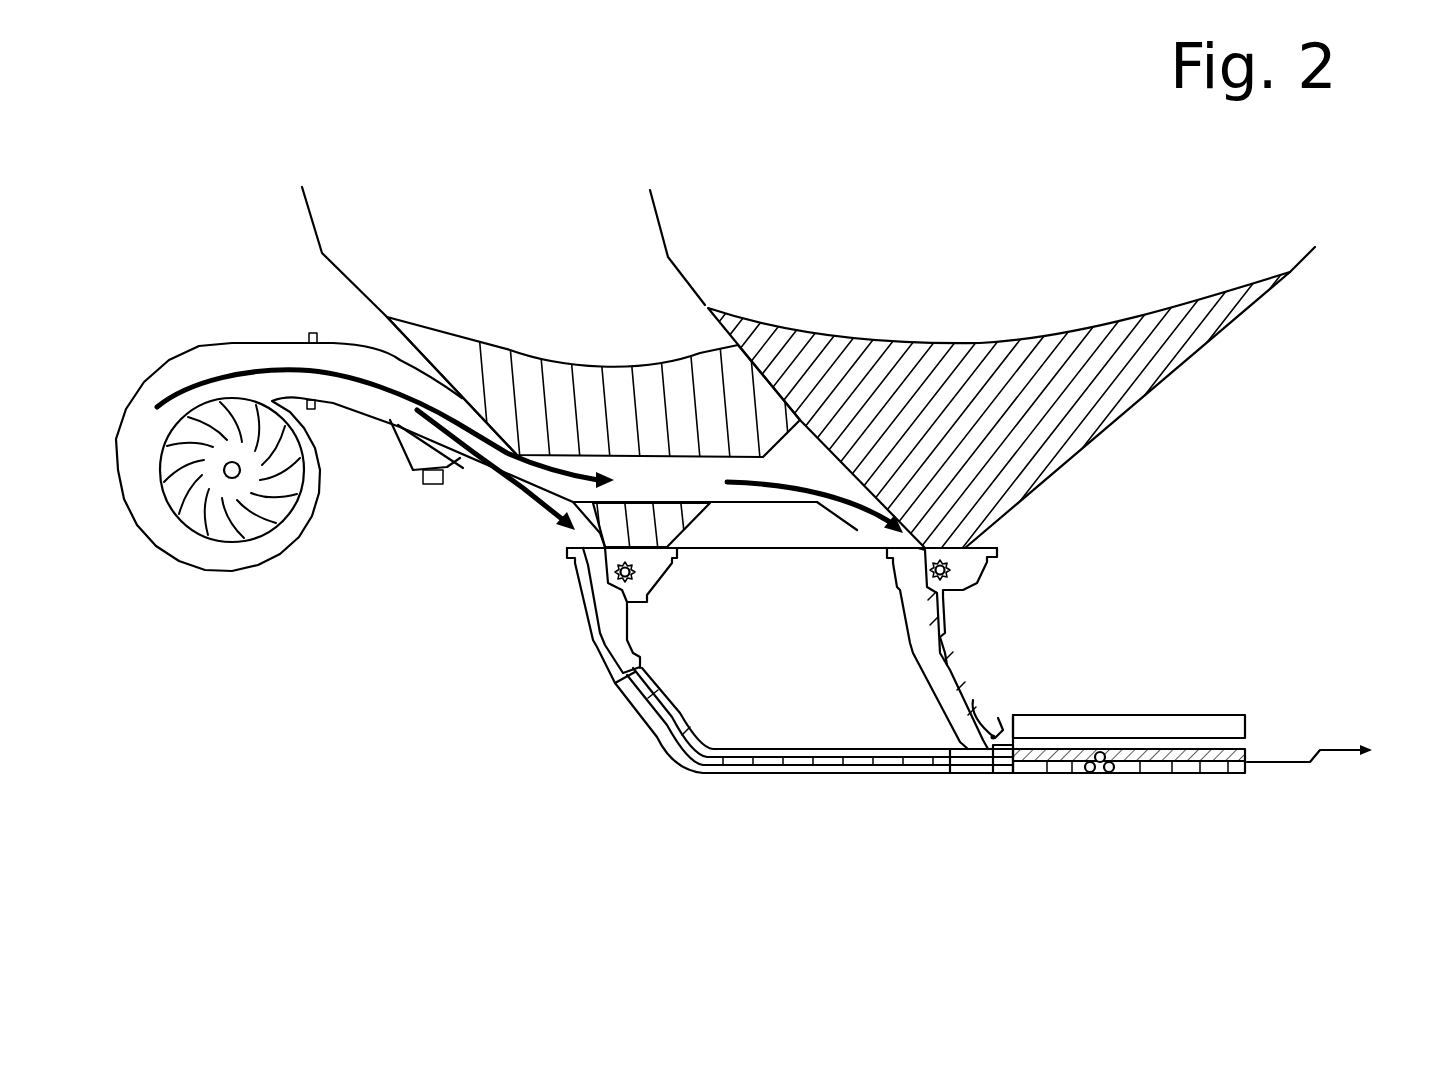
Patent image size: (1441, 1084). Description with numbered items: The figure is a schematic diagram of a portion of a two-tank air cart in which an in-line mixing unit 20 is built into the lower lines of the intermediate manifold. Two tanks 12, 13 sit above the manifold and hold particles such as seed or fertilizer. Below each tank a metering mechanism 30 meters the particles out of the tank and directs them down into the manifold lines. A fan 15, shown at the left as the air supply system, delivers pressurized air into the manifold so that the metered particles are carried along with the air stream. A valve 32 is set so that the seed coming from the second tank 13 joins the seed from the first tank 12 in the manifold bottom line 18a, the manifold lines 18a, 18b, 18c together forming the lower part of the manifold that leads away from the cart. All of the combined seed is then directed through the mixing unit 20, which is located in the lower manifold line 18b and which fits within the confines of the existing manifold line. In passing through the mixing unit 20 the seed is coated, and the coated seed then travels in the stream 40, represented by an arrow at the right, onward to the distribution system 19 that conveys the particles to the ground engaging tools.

The tank 12 is at (489, 231).
The tank 13 is at (900, 224).
The fan 15 is at (180, 563).
The manifold bottom line 18a is at (1207, 772).
The lower manifold line 18b is at (723, 773).
The upper duct section 18c is at (1135, 717).
The distribution system 19 is at (1217, 612).
The mixing unit 20 is at (1085, 780).
The metering mechanism 30 is at (598, 562).
The valve 32 is at (997, 713).
The stream 40 is at (1330, 748).